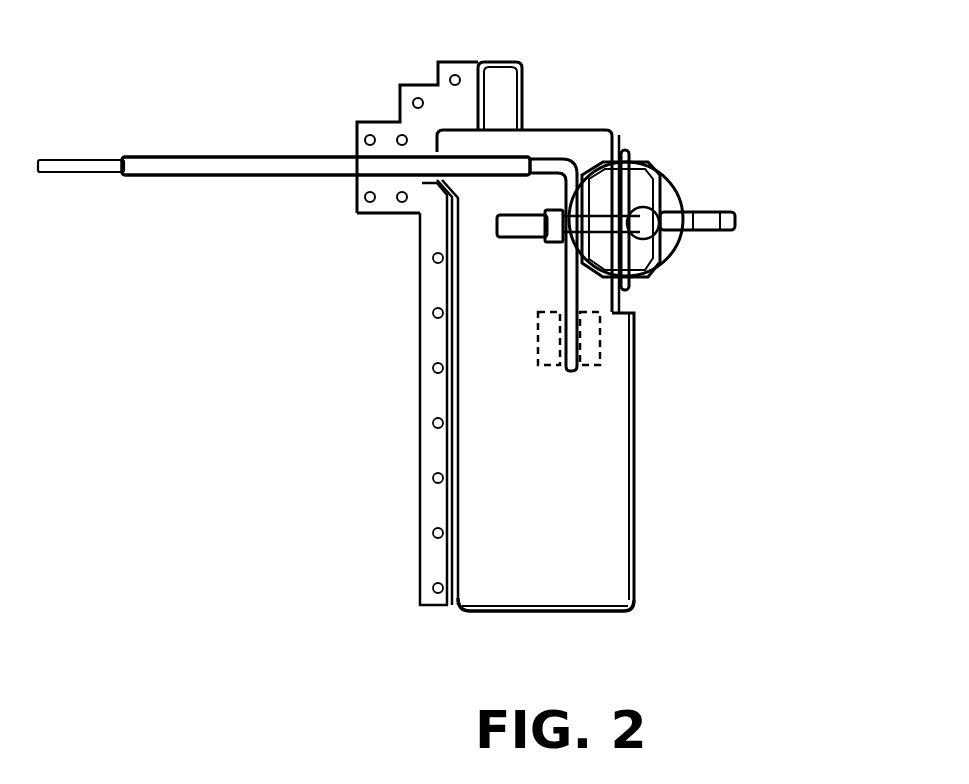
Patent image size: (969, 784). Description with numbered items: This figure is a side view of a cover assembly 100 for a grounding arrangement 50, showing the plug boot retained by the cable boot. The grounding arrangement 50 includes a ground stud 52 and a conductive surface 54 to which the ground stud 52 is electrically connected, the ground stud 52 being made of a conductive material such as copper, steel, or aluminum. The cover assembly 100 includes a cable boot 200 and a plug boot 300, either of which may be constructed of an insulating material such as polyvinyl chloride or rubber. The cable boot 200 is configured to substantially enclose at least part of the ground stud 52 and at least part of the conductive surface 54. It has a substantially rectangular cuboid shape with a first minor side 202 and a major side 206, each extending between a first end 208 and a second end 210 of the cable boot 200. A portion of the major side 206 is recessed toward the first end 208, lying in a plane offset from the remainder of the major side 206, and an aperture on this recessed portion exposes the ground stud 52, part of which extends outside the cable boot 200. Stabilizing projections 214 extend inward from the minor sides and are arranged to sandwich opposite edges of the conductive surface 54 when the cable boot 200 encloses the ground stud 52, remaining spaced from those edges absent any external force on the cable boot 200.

The grounding arrangement 50 is at (122, 230).
The ground stud 52 is at (638, 237).
The conductive surface 54 is at (102, 165).
The cover assembly 100 is at (705, 120).
The cable boot 200 is at (453, 437).
The first minor side 202 is at (556, 531).
The major side 206 is at (636, 455).
The first end 208 is at (588, 130).
The second end 210 is at (570, 613).
The stabilizing projections 214 is at (592, 352).
The plug boot 300 is at (737, 226).